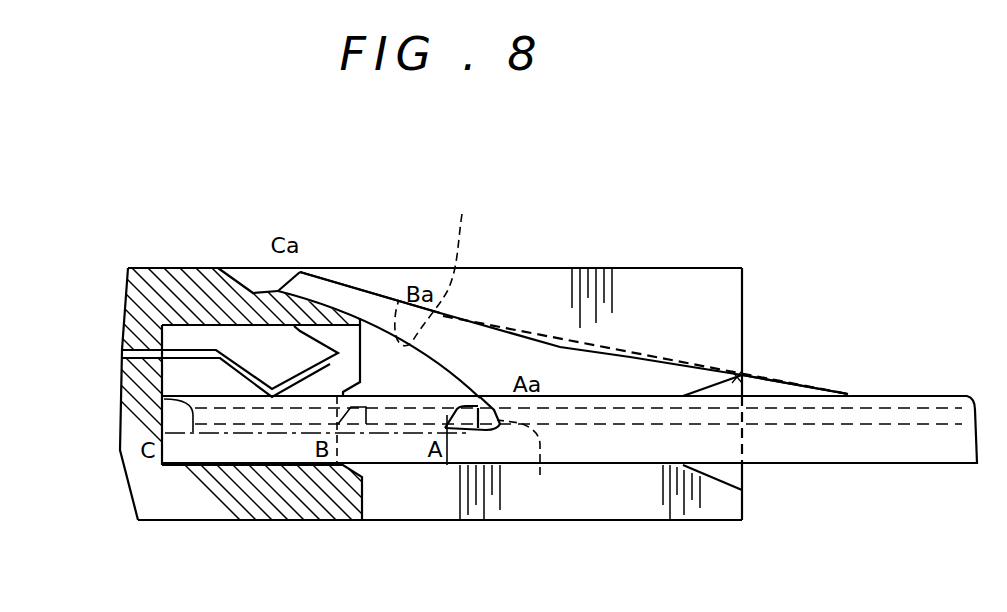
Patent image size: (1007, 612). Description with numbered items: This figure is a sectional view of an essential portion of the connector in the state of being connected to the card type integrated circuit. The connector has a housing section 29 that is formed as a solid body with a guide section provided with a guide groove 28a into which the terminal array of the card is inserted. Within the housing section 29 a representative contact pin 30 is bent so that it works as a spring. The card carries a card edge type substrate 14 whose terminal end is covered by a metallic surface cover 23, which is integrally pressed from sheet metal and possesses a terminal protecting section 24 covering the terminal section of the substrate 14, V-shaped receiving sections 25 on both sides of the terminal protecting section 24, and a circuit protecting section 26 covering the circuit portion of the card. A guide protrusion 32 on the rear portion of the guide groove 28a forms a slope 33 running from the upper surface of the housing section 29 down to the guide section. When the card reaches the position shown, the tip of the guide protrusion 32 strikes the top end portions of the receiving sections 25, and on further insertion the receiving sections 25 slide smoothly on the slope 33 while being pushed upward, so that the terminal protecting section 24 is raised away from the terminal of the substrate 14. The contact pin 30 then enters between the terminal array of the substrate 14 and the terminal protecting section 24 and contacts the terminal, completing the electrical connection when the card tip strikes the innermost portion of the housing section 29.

The housing section 29 is at (152, 280).
The receiving sections 25 is at (272, 295).
The terminal protecting section 24 is at (343, 292).
The metallic surface cover 23 is at (375, 288).
The guide protrusion 32 is at (430, 372).
The circuit protecting section 26 is at (650, 363).
The guide groove 28a is at (738, 380).
The card edge type substrate 14 is at (406, 406).
The slope 33 is at (470, 393).
The contact pin 30 is at (272, 390).